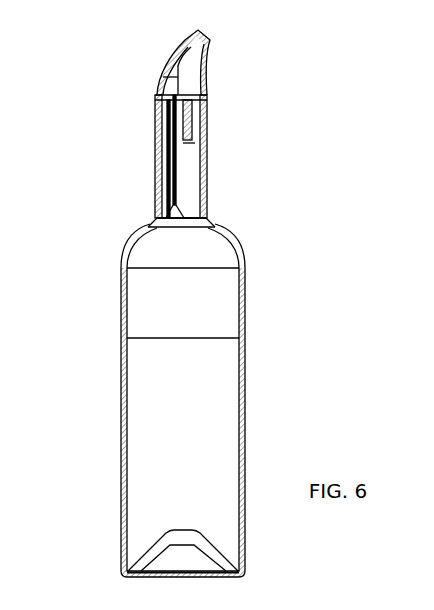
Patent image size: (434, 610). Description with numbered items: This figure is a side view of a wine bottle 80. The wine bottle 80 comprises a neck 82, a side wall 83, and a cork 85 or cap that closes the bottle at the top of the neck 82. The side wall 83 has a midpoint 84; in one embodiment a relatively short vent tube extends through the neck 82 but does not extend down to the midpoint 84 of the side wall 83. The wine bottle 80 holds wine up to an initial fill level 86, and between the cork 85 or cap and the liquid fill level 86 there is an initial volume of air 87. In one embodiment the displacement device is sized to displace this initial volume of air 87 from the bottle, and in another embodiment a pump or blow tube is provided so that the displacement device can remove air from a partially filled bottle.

The wine bottle 80 is at (176, 303).
The neck 82 is at (157, 198).
The side wall 83 is at (245, 300).
The midpoint 84 is at (183, 317).
The cork 85 is at (207, 109).
The initial fill level 86 is at (181, 232).
The initial volume of air 87 is at (193, 185).